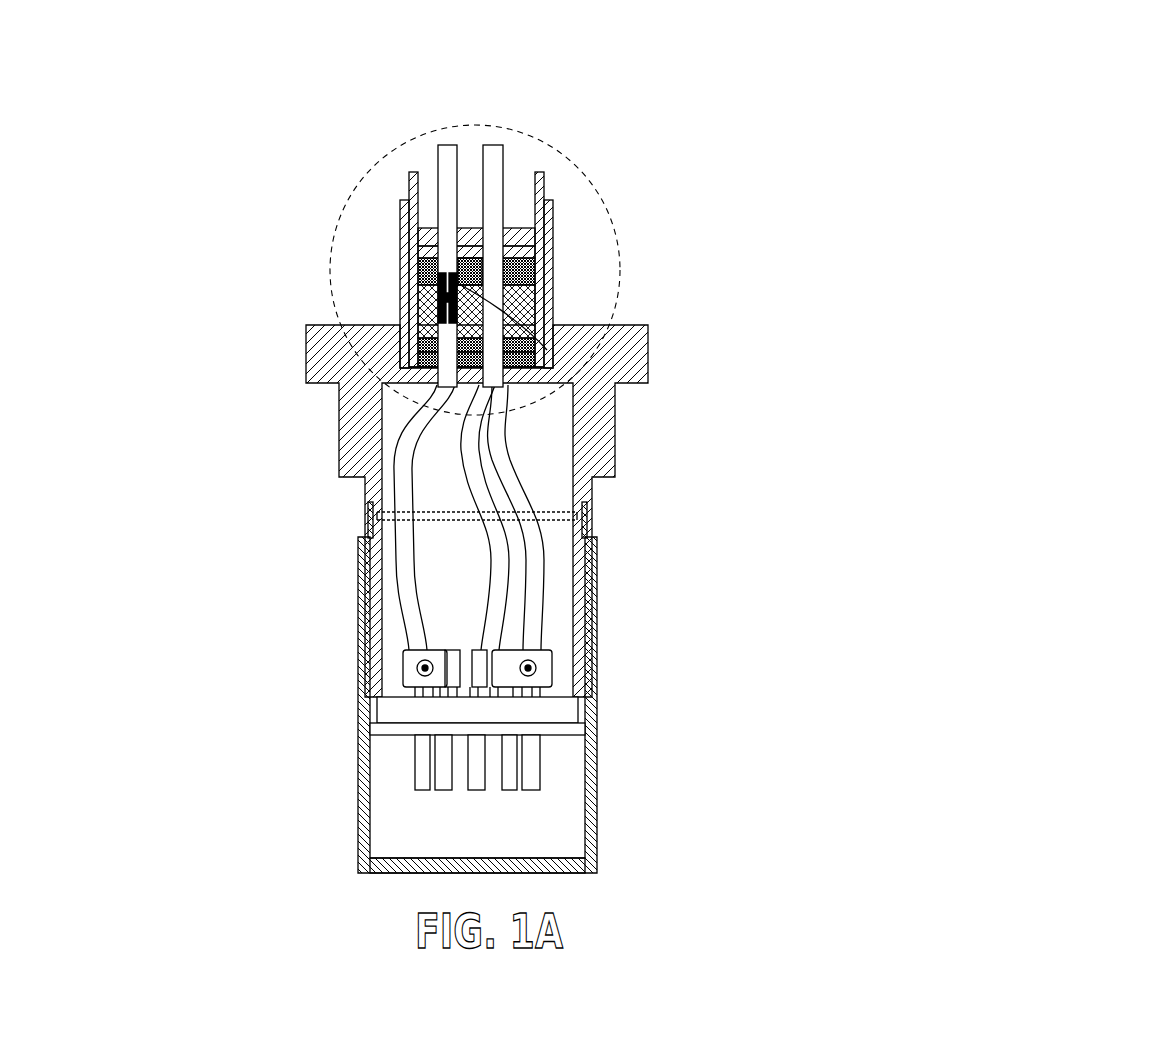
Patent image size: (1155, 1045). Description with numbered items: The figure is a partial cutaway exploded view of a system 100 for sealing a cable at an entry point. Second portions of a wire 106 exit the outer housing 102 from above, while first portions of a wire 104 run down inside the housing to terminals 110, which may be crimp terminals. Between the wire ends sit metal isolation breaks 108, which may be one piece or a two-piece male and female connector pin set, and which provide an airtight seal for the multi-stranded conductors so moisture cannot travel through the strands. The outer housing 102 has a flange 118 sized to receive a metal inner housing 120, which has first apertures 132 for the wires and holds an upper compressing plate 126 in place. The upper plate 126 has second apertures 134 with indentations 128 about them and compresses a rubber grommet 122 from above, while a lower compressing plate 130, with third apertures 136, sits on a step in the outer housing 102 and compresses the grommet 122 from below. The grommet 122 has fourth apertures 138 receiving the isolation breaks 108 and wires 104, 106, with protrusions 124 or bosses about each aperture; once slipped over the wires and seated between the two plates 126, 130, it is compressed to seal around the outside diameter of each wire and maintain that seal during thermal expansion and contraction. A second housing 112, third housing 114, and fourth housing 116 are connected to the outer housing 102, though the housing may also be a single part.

The system for sealing a cable at an entry point 100 is at (1030, 76).
The outer housing 102 is at (615, 440).
The first portions of wire 104 is at (420, 577).
The second portions of wire 106 is at (447, 158).
The metal isolation break 108 is at (437, 287).
The terminals 110 is at (405, 670).
The second housing 112 is at (597, 837).
The third housing 114 is at (577, 645).
The fourth housing 116 is at (582, 728).
The flange 118 is at (553, 216).
The metal inner housing 120 is at (538, 180).
The rubber grommet 122 is at (528, 303).
The protrusions 124 is at (547, 350).
The upper compressing plate 126 is at (423, 263).
The indentations 128 is at (470, 277).
The lower compressing plate 130 is at (433, 360).
The first apertures 132 is at (437, 237).
The second apertures 134 is at (437, 258).
The third apertures 136 is at (437, 353).
The fourth apertures 138 is at (437, 333).